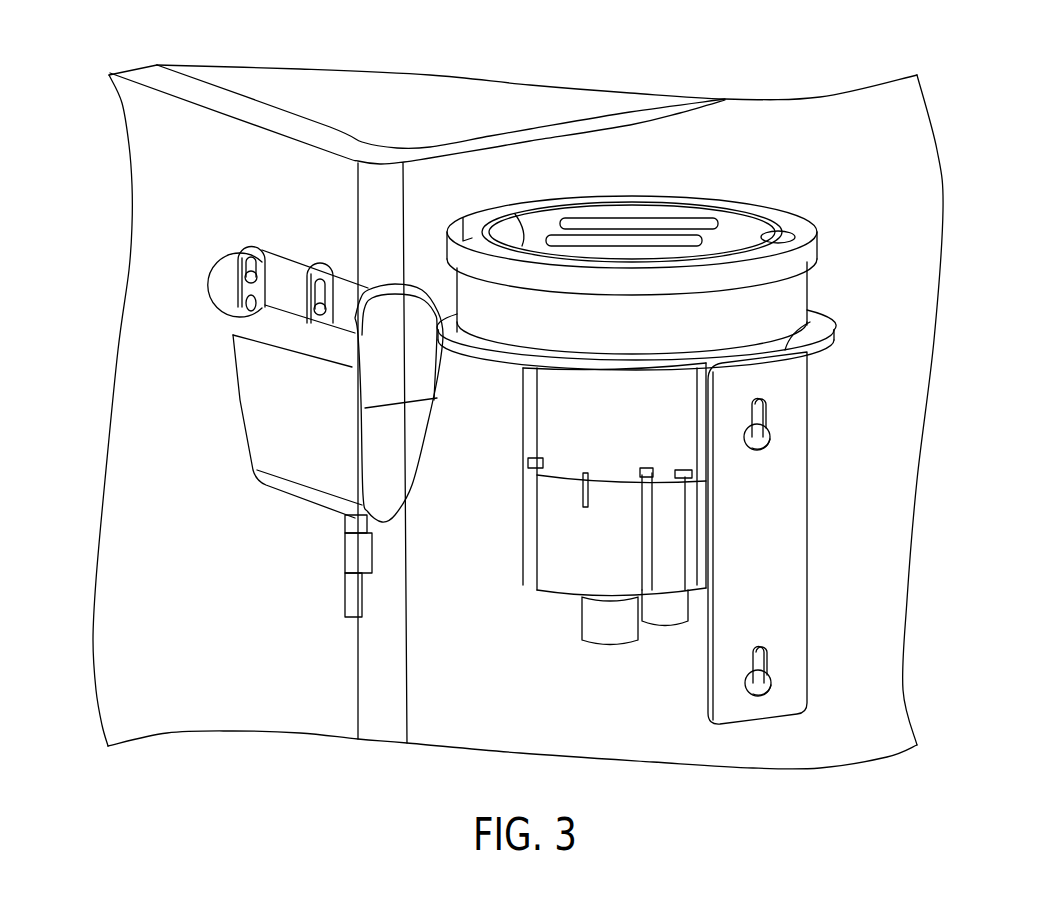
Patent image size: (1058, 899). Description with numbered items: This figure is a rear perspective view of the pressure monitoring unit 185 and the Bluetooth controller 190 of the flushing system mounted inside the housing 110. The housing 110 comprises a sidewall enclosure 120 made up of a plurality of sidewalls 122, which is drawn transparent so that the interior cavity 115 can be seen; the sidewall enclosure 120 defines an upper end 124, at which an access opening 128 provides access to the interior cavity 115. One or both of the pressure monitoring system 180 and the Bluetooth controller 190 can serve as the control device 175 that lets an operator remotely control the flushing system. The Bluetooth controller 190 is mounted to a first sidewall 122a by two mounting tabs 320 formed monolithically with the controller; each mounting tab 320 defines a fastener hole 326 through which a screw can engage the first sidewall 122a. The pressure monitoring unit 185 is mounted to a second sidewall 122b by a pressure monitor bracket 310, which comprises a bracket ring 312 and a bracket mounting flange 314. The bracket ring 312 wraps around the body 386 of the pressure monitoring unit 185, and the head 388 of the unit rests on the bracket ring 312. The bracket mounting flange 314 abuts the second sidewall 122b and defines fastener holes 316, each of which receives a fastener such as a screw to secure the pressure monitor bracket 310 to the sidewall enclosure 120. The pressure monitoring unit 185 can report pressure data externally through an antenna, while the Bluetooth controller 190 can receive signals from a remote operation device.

The housing 110 is at (115, 643).
The interior cavity 115 is at (453, 92).
The sidewall enclosure 120 is at (494, 375).
The sidewalls 122 is at (518, 375).
The first sidewall 122a is at (233, 140).
The second sidewall 122b is at (800, 133).
The upper end 124 is at (293, 128).
The access opening 128 is at (715, 103).
The control device 175 is at (532, 469).
The pressure monitoring system 180 is at (532, 469).
The pressure monitoring unit 185 is at (666, 385).
The Bluetooth controller 190 is at (276, 396).
The pressure monitor bracket 310 is at (831, 523).
The bracket ring 312 is at (815, 322).
The bracket mounting flange 314 is at (793, 530).
The fastener holes 316 is at (776, 431).
The mounting tabs 320 is at (243, 245).
The fastener hole 326 is at (298, 313).
The body 386 is at (572, 552).
The head 388 is at (618, 318).